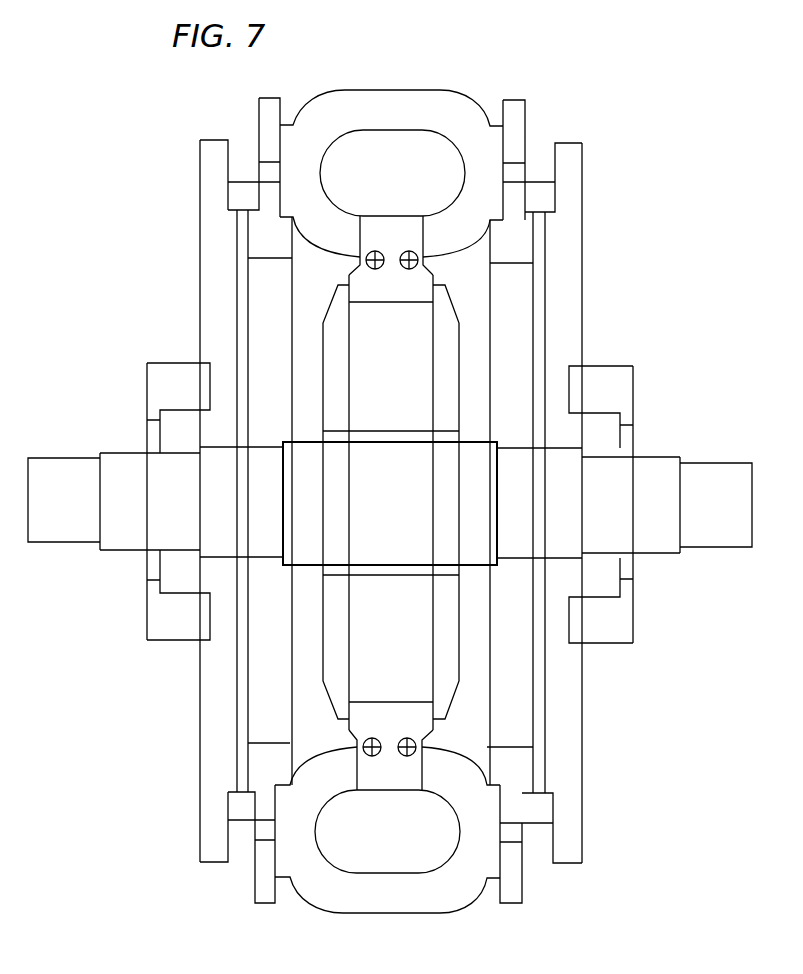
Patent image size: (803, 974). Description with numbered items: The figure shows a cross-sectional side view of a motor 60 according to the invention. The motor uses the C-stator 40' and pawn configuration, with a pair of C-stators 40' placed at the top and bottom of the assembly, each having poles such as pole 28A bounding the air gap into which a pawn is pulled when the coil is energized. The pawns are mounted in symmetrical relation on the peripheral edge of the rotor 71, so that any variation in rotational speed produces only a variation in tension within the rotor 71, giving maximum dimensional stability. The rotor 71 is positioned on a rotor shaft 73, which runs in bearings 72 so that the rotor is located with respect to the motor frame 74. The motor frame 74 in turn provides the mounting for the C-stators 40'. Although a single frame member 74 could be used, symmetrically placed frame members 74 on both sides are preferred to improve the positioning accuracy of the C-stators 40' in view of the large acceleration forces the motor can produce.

The motor 60 is at (616, 136).
The C-stator 40' is at (389, 471).
The pole 28A is at (440, 257).
The rotor 71 is at (460, 333).
The bearings 72 is at (633, 437).
The rotor shaft 73 is at (658, 556).
The motor frame 74 is at (582, 697).